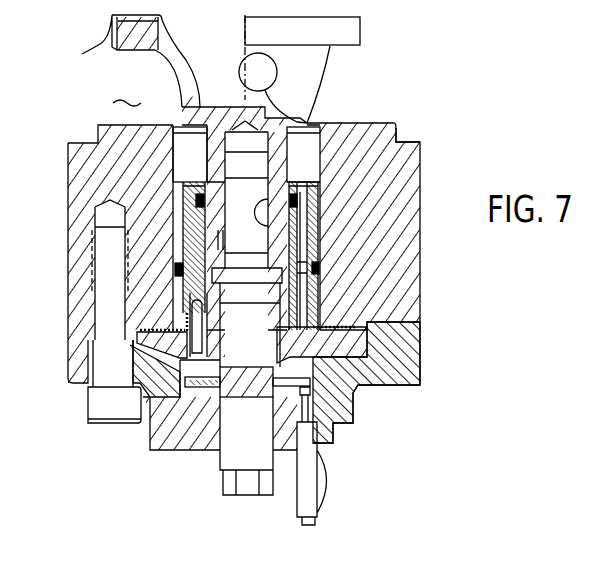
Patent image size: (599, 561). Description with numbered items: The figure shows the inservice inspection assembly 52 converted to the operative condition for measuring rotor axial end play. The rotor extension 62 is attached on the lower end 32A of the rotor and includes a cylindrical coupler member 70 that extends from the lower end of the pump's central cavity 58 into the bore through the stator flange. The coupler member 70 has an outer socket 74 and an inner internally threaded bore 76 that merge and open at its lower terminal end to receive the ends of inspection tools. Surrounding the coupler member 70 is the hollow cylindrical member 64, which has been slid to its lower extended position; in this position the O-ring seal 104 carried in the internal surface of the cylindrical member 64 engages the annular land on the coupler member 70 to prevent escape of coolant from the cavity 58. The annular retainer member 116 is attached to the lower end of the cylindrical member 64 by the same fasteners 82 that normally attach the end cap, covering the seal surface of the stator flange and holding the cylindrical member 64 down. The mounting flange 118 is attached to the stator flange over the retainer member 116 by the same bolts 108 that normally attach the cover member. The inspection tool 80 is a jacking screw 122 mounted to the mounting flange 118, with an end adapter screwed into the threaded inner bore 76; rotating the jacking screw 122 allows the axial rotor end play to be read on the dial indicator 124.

The lower end of the rotor 32A is at (108, 48).
The central cavity 58 is at (244, 263).
The rotor extension 62 is at (303, 80).
The inservice inspection assembly 52 is at (390, 96).
The coupler member 70 is at (283, 160).
The O-ring seal 104 is at (300, 183).
The inner internally threaded bore 76 is at (267, 227).
The outer socket 74 is at (328, 258).
The hollow cylindrical member 64 is at (300, 270).
The inspection tool 80 is at (290, 297).
The annular retainer member 116 is at (310, 358).
The mounting flange 118 is at (380, 386).
The dial indicator 124 is at (321, 475).
The jacking screw 122 is at (230, 447).
The fasteners 82 is at (197, 356).
The bolts 108 is at (97, 403).